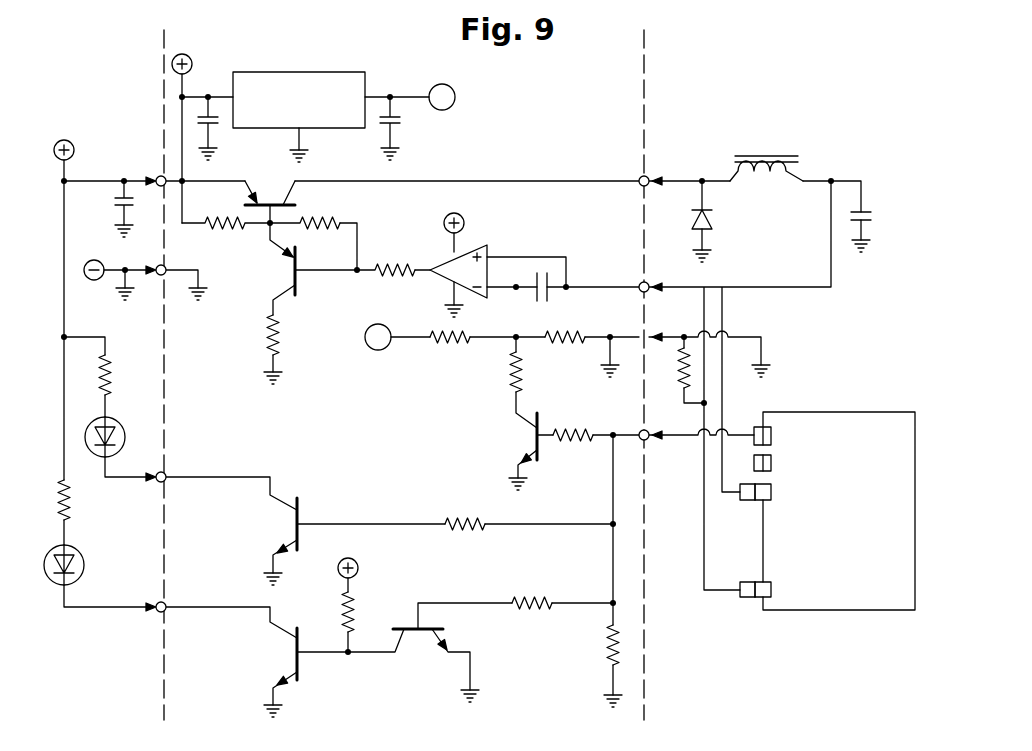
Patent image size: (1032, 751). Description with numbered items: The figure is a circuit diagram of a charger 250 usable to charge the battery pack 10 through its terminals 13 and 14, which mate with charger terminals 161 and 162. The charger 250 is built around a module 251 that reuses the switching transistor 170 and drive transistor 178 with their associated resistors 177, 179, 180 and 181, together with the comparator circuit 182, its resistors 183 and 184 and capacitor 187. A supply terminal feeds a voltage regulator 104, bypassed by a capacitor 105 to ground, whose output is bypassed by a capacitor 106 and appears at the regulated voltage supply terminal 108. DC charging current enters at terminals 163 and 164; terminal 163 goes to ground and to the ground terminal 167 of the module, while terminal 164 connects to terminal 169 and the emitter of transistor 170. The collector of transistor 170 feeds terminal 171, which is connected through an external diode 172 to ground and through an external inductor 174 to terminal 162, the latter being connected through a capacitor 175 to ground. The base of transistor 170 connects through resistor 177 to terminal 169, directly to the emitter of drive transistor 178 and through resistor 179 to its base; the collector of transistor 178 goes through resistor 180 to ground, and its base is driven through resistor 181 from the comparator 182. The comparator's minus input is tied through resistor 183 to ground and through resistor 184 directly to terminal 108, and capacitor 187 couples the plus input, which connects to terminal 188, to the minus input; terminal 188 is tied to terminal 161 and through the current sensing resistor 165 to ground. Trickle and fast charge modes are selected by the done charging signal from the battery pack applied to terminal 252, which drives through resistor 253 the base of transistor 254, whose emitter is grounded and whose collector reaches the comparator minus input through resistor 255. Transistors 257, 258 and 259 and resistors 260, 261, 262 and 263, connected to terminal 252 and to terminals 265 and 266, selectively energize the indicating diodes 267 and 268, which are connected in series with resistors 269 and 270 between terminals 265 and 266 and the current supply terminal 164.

The battery pack 10 is at (864, 412).
The terminal 13 is at (758, 598).
The terminal 14 is at (756, 503).
The voltage regulator 104 is at (310, 72).
The capacitor 105 is at (216, 126).
The capacitor 106 is at (400, 120).
The terminal 108 is at (452, 108).
The terminal 161 is at (730, 598).
The terminal 162 is at (742, 505).
The terminal 163 is at (86, 264).
The terminal 164 is at (74, 112).
The current sensing resistor 165 is at (683, 360).
The ground terminal 167 is at (158, 276).
The terminal 169 is at (159, 176).
The transistor 170 is at (297, 210).
The terminal 171 is at (648, 176).
The diode 172 is at (708, 222).
The inductor 174 is at (752, 190).
The capacitor 175 is at (870, 218).
The resistor 177 is at (242, 226).
The drive transistor 178 is at (300, 282).
The resistor 179 is at (320, 226).
The resistor 180 is at (270, 345).
The resistor 181 is at (400, 276).
The comparator circuit 182 is at (468, 244).
The resistor 183 is at (550, 342).
The resistor 184 is at (432, 342).
The capacitor 187 is at (548, 296).
The terminal 188 is at (648, 282).
The charger 250 is at (823, 104).
The module 251 is at (648, 118).
The terminal 252 is at (648, 442).
The resistor 253 is at (566, 430).
The transistor 254 is at (545, 462).
The resistor 255 is at (510, 386).
The transistor 257 is at (299, 507).
The transistor 258 is at (300, 628).
The transistor 259 is at (446, 628).
The resistor 260 is at (356, 626).
The resistor 261 is at (472, 518).
The resistor 262 is at (534, 598).
The resistor 263 is at (610, 652).
The terminal 265 is at (166, 476).
The terminal 266 is at (166, 612).
The indicating diode 267 is at (96, 470).
The indicating diode 268 is at (86, 572).
The resistor 269 is at (108, 386).
The resistor 270 is at (70, 500).